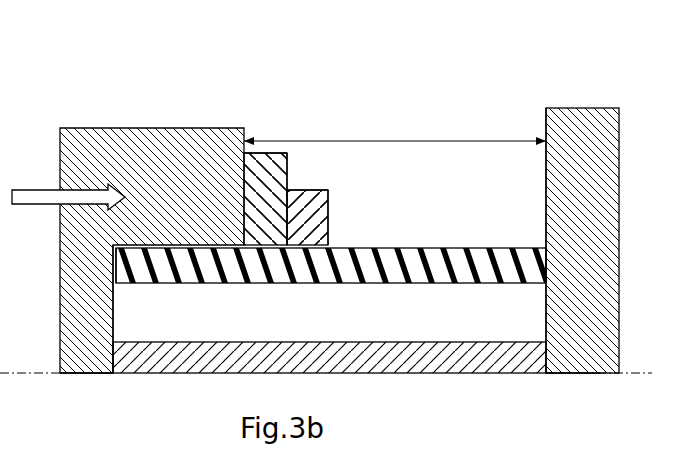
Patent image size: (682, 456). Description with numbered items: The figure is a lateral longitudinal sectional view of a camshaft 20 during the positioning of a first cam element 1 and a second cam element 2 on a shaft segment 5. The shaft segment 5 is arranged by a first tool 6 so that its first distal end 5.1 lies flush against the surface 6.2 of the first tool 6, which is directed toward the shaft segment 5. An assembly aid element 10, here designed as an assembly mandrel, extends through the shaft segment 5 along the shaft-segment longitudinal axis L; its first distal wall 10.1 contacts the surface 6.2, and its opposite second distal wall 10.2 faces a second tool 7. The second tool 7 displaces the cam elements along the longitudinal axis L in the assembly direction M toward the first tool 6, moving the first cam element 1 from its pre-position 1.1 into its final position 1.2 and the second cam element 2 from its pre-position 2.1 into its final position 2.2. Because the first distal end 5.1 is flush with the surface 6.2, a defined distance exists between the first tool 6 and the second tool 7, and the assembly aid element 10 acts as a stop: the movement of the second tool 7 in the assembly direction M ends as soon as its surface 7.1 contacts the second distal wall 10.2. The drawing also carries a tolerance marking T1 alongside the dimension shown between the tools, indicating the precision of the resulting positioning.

The first cam element 1 is at (251, 148).
The pre-position 1.1 is at (280, 170).
The final position 1.2 is at (292, 188).
The second cam element 2 is at (331, 244).
The pre-position of second cam element 2.1 is at (319, 226).
The final position of second cam element 2.2 is at (331, 205).
The shaft segment 5 is at (433, 246).
The first distal end 5.1 is at (550, 263).
The first tool 6 is at (585, 108).
The surface of the first tool 6.2 is at (545, 171).
The second tool 7 is at (160, 128).
The surface of the second tool 7.1 is at (114, 322).
The assembly aid element 10 is at (166, 374).
The first distal wall 10.1 is at (568, 374).
The second distal wall 10.2 is at (86, 375).
The camshaft 20 is at (470, 126).
The assembly direction M is at (38, 186).
The shaft-segment longitudinal axis L is at (42, 372).
The tolerance T1 is at (459, 450).